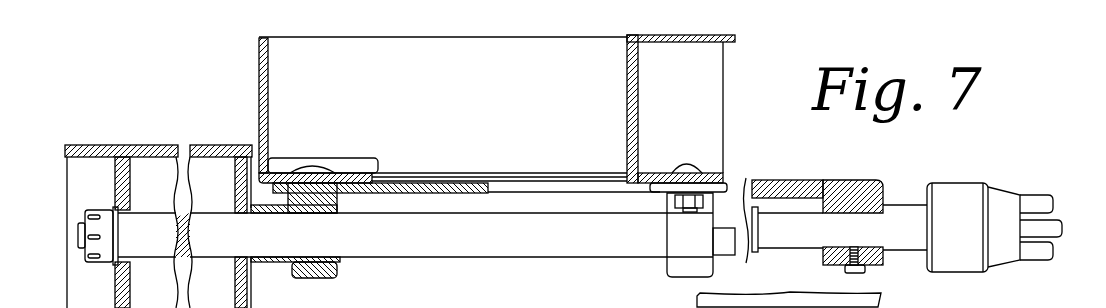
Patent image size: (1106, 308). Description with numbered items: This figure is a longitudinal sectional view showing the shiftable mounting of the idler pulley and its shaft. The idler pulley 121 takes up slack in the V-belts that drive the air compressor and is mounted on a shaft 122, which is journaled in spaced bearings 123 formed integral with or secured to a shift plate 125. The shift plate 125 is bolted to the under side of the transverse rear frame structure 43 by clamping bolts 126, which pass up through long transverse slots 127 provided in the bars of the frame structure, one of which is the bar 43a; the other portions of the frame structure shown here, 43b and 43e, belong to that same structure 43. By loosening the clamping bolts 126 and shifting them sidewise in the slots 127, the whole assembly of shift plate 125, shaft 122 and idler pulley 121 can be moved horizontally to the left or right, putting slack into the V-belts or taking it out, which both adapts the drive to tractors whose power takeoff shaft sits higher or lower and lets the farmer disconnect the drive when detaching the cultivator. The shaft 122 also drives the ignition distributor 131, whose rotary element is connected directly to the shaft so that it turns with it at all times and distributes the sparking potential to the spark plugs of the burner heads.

The transverse rear frame structure 43 is at (498, 69).
The bar of the frame structure 43a is at (268, 88).
The box channel wall 43b is at (627, 78).
The box bottom flange 43e is at (648, 172).
The idler pulley 121 is at (878, 298).
The shaft 122 is at (450, 240).
The bearings 123 is at (321, 278).
The shift plate 125 is at (452, 186).
The clamping bolts 126 is at (318, 170).
The long transverse slots 127 is at (722, 167).
The distributor 131 is at (963, 192).